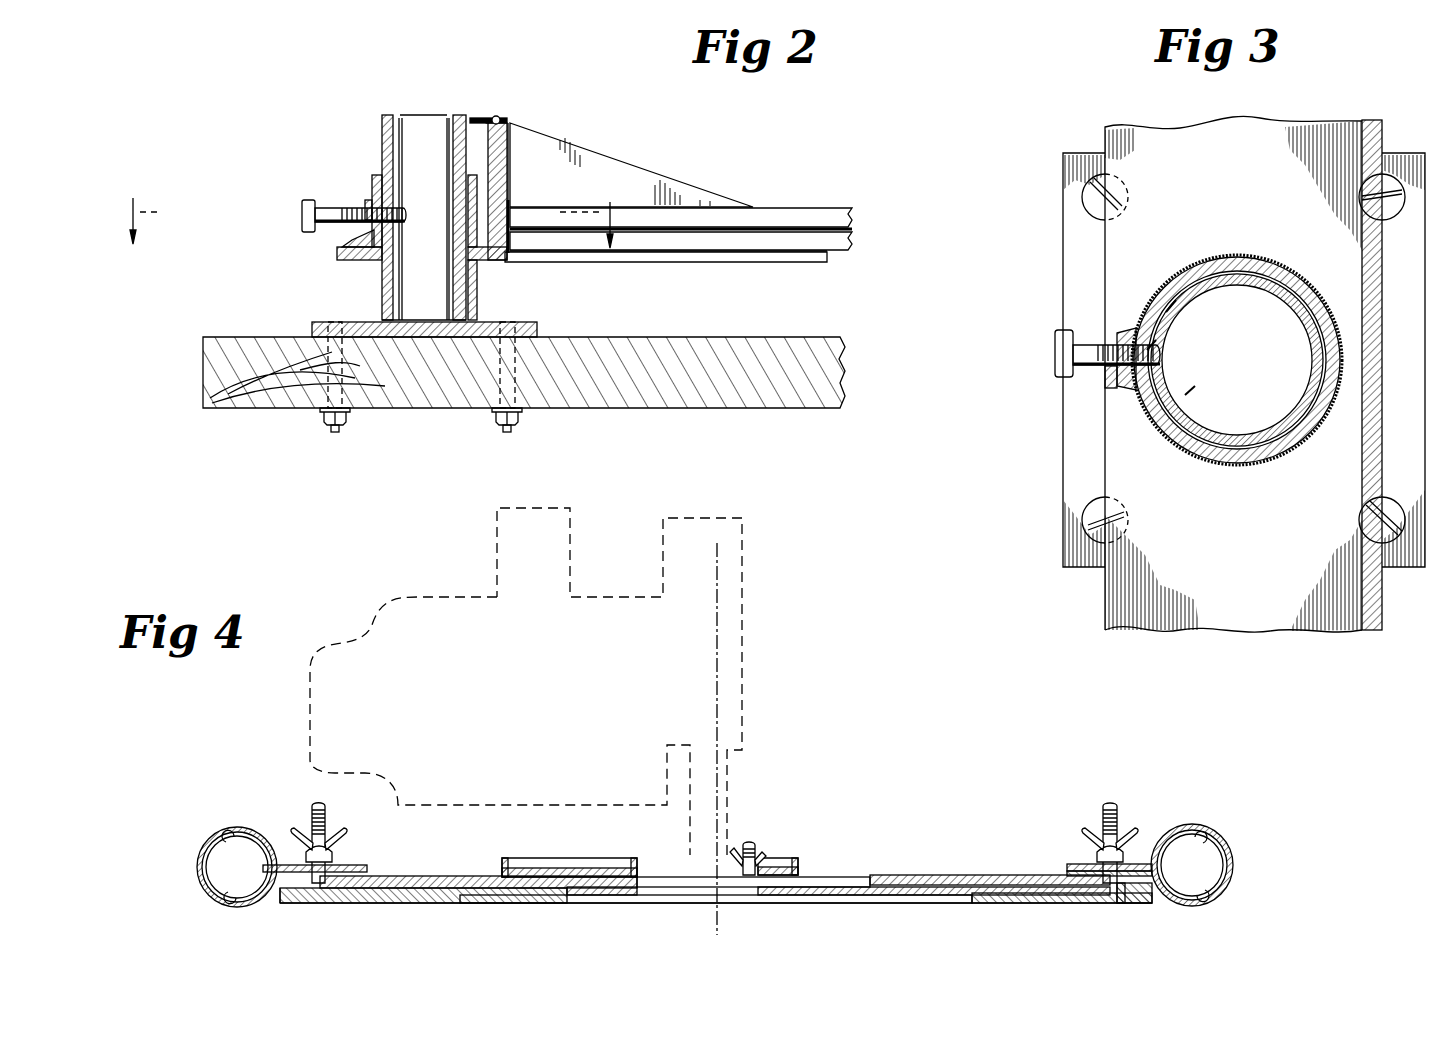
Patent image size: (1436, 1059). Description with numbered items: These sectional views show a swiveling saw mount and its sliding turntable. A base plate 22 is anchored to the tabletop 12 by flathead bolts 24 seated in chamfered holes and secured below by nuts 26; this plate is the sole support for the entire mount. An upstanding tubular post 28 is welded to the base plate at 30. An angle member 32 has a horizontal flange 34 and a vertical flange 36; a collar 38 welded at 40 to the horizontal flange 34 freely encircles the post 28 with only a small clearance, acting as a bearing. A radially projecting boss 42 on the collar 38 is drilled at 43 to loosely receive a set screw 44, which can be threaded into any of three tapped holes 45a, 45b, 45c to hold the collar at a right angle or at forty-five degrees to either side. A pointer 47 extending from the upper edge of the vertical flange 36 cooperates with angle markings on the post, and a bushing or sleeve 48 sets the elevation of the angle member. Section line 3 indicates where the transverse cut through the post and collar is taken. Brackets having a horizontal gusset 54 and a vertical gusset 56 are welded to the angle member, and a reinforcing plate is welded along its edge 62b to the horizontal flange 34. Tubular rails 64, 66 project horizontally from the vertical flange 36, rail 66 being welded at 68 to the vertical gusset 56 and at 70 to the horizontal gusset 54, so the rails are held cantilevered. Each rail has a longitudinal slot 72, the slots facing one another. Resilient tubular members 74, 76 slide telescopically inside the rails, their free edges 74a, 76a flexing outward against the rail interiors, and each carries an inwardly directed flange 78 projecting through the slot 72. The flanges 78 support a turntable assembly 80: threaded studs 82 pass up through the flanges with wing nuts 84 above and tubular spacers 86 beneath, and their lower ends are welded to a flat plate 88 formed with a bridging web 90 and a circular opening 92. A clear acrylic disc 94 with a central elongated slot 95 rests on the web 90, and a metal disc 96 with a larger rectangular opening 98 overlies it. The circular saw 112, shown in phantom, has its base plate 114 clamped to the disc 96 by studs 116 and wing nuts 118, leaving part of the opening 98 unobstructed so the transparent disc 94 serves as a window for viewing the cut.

In FIG. 2, the section line 3— 3 is at (371, 241).
In FIG. 2, the tabletop 12 is at (250, 405).
In FIG. 2, the base plate 22 is at (312, 328).
In FIG. 3, the base plate 22 is at (1077, 570).
In FIG. 2, the flathead bolts 24 is at (335, 431).
In FIG. 3, the flathead bolts 24 is at (1395, 180).
In FIG. 2, the nuts 26 is at (348, 418).
In FIG. 2, the upstanding tubular post 28 is at (386, 117).
In FIG. 3, the upstanding tubular post 28 is at (1232, 440).
In FIG. 2, the weld 30 is at (392, 318).
In FIG. 2, the angle member 32 is at (513, 121).
In FIG. 2, the horizontal flange 34 is at (345, 262).
In FIG. 3, the horizontal flange 34 is at (1247, 603).
In FIG. 2, the vertical flange 36 is at (510, 150).
In FIG. 3, the vertical flange 36 is at (1360, 458).
In FIG. 2, the collar 38 is at (477, 195).
In FIG. 3, the collar 38 is at (1262, 262).
In FIG. 2, the weld 40 is at (510, 222).
In FIG. 3, the weld 40 is at (1192, 253).
In FIG. 2, the radially projecting boss 42 is at (370, 200).
In FIG. 3, the radially projecting boss 42 is at (1117, 330).
In FIG. 2, the drilled hole 43 is at (364, 205).
In FIG. 3, the drilled hole 43 is at (1108, 376).
In FIG. 2, the set screw 44 is at (300, 215).
In FIG. 3, the set screw 44 is at (1055, 360).
In FIG. 3, the tapped hole 45a is at (1152, 345).
In FIG. 3, the tapped hole 45b is at (1190, 390).
In FIG. 3, the tapped hole 45c is at (1180, 303).
In FIG. 2, the pointer 47 is at (488, 116).
In FIG. 2, the bushing or sleeve 48 is at (478, 290).
In FIG. 2, the horizontal flange or gusset 54 is at (650, 262).
In FIG. 2, the vertical flange or gusset 56 is at (447, 176).
In FIG. 2, the plate edge 62b is at (345, 236).
In FIG. 4, the tubular rail 64 is at (200, 852).
In FIG. 2, the tubular rail 66 is at (785, 210).
In FIG. 4, the tubular rail 66 is at (1237, 866).
In FIG. 2, the weld 68 is at (637, 200).
In FIG. 2, the weld 70 is at (738, 252).
In FIG. 2, the longitudinal slot 72 is at (835, 227).
In FIG. 4, the longitudinal slot 72 is at (275, 865).
In FIG. 4, the tubular member 74 is at (210, 895).
In FIG. 4, the free edge 74a is at (226, 838).
In FIG. 4, the tubular member 76 is at (1225, 890).
In FIG. 4, the free edge 76a is at (1215, 840).
In FIG. 4, the inwardly directed strip or flange 78 is at (360, 872).
In FIG. 4, the turntable assembly 80 is at (900, 910).
In FIG. 4, the threaded studs 82 is at (318, 803).
In FIG. 4, the wing nut 84 is at (330, 860).
In FIG. 4, the tubular spacers 86 is at (300, 890).
In FIG. 4, the flat plate 88 is at (1140, 905).
In FIG. 4, the bridging web 90 is at (390, 905).
In FIG. 4, the circular opening 92 is at (540, 905).
In FIG. 4, the circular plate or disc 94 is at (815, 896).
In FIG. 4, the central elongated opening or slot 95 is at (678, 897).
In FIG. 4, the circular plate or disc 96 is at (980, 875).
In FIG. 4, the rectangular opening 98 is at (805, 875).
In FIG. 4, the circular saw 112 is at (416, 590).
In FIG. 4, the base plate of the saw 114 is at (535, 870).
In FIG. 4, the studs or screws 116 is at (748, 848).
In FIG. 4, the wing nuts 118 is at (770, 858).